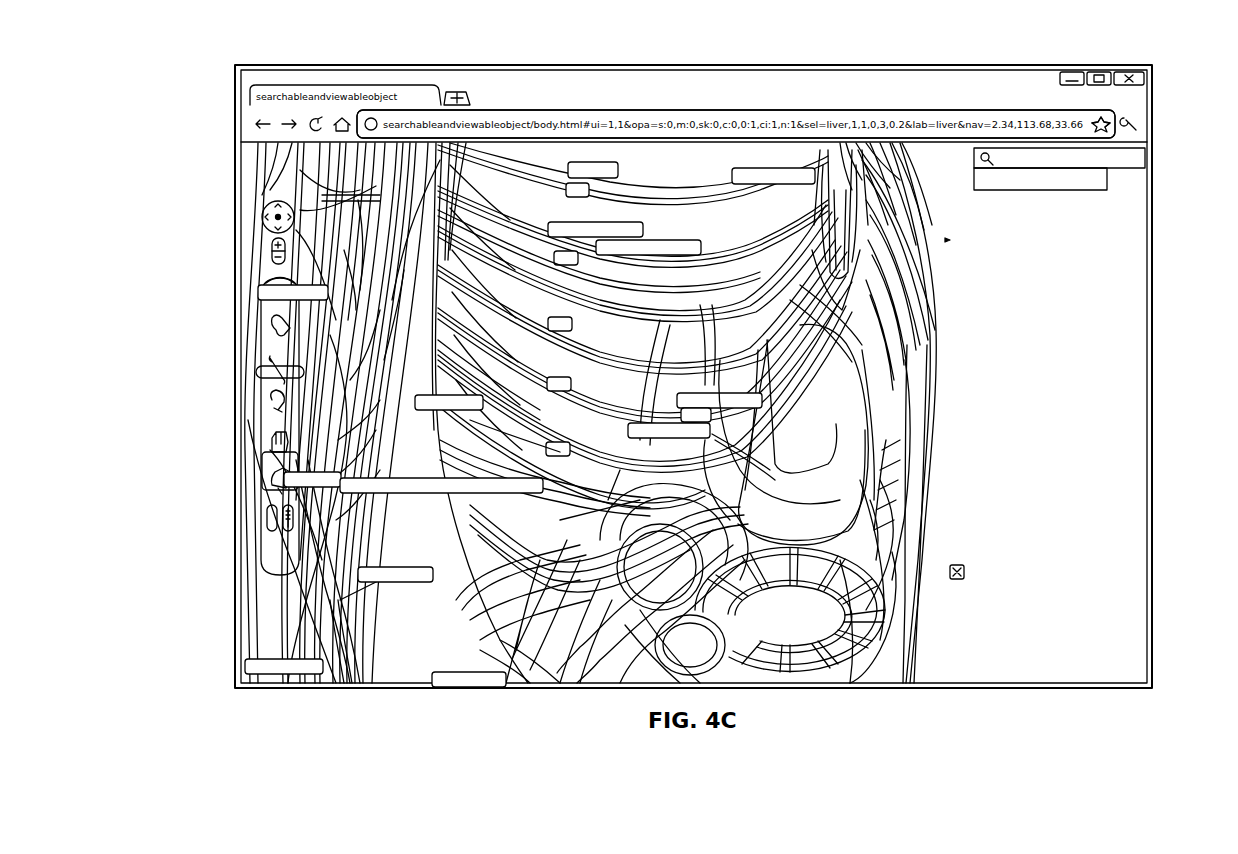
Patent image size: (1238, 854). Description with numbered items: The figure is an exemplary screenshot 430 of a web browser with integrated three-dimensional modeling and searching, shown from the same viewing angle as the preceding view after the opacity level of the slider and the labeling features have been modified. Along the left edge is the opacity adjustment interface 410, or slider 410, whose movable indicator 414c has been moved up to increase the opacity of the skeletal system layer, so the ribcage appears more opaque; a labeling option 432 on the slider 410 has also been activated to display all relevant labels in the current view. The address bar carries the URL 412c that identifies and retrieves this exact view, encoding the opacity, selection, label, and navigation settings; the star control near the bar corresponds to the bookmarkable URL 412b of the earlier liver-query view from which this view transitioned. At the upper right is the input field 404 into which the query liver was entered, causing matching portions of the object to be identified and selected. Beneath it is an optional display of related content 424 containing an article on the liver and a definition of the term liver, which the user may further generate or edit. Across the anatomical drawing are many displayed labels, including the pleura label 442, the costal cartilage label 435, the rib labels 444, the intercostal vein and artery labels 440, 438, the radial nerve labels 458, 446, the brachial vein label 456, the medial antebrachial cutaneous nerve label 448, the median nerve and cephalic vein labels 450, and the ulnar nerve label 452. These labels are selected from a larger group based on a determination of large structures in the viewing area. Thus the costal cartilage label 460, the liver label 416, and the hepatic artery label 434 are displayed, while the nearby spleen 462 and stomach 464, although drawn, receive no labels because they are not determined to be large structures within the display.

The exemplary screenshot 430 is at (250, 48).
The URL 412b is at (1080, 128).
The URL 412c is at (970, 138).
The input field 404 is at (1148, 158).
The related content 424 is at (1158, 225).
The opacity adjustment interface 410 is at (262, 335).
The bone tool icon 414c is at (258, 373).
The labeling option 432 is at (264, 522).
The label 458 is at (332, 293).
The label 456 is at (343, 470).
The label 448 is at (546, 483).
The label 442 is at (624, 170).
The label 435 is at (844, 168).
The label 440 is at (658, 212).
The label 444 is at (595, 190).
The label 438 is at (712, 247).
The label 446 is at (494, 399).
The costal cartilage label 460 is at (768, 400).
The liver label 416 is at (720, 412).
The hepatic artery label 434 is at (720, 430).
The spleen 462 is at (884, 438).
The stomach 464 is at (861, 508).
The label 452 is at (512, 680).
The label 450 is at (446, 571).